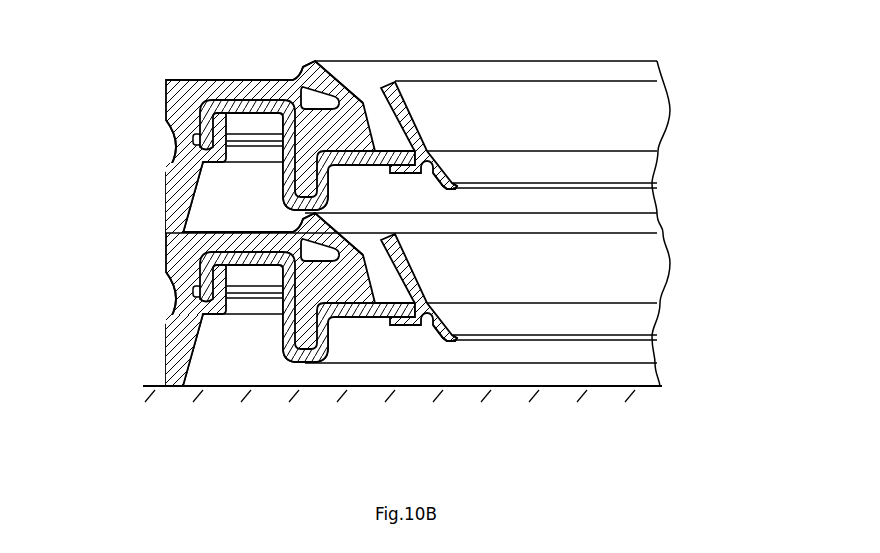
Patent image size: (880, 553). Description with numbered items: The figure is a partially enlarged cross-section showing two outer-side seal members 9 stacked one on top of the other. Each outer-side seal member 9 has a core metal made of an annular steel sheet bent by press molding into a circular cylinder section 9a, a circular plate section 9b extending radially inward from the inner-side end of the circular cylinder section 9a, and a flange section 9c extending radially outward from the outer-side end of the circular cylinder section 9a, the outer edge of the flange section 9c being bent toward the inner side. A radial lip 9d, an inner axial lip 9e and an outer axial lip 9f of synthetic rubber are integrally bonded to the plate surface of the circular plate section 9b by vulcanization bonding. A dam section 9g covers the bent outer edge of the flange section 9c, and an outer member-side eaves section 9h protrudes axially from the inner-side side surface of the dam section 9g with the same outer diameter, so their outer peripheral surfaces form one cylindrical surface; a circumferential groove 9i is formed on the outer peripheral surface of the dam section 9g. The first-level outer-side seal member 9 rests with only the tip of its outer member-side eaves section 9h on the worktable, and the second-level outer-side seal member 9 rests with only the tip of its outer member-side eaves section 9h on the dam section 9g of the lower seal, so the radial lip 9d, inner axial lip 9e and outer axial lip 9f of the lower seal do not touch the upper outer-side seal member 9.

The outer-side seal member 9 is at (675, 215).
The circular cylinder section 9a is at (277, 327).
The circular plate section 9b is at (372, 312).
The flange section 9c is at (243, 262).
The radial lip 9d is at (447, 338).
The inner axial lip 9e is at (407, 283).
The outer axial lip 9f is at (322, 240).
The dam section 9g is at (177, 248).
The outer member-side eaves section 9h is at (173, 353).
The groove 9i is at (175, 300).